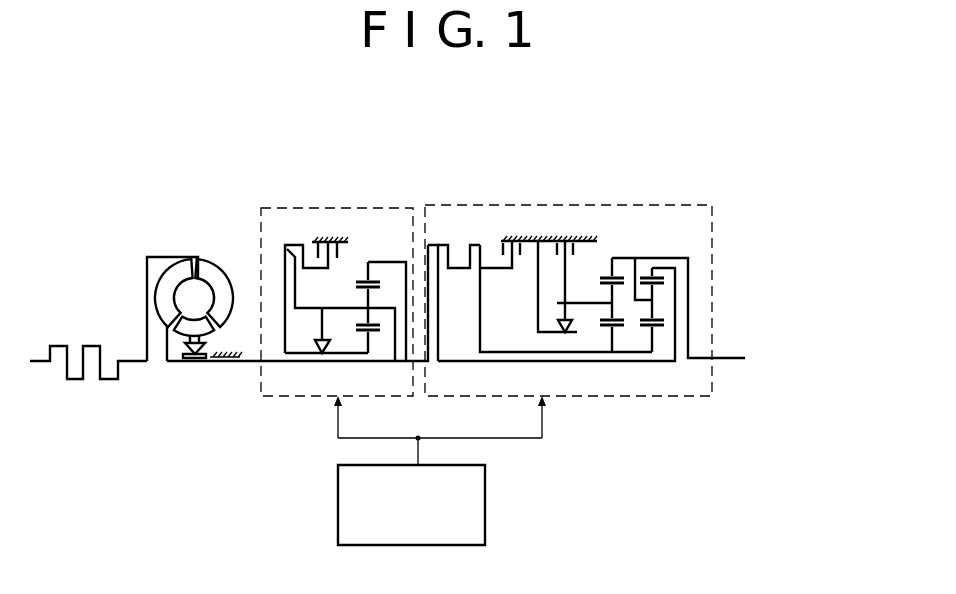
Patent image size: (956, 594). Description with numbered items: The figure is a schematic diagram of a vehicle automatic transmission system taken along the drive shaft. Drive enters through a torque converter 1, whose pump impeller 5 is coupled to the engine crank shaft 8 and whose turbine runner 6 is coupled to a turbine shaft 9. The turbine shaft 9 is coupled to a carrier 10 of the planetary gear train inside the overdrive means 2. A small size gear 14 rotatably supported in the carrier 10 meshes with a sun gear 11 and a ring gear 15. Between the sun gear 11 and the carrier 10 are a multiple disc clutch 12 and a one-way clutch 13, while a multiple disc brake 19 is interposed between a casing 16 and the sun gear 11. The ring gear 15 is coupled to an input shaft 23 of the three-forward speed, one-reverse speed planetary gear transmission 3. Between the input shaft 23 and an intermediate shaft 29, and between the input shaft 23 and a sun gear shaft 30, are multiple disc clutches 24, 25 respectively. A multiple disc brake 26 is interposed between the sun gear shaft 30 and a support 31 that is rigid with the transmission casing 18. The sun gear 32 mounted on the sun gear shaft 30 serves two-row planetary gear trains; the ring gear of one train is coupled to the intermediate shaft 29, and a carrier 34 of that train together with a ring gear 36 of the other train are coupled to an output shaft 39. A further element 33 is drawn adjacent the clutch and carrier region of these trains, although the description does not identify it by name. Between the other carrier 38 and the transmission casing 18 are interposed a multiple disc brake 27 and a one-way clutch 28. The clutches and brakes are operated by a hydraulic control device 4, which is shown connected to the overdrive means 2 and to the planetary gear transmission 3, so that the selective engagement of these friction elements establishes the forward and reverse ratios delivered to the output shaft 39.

The torque converter 1 is at (179, 306).
The overdrive means 2 is at (388, 208).
The planetary gear transmission 3 is at (712, 205).
The hydraulic control device 4 is at (485, 502).
The pump impeller 5 is at (217, 280).
The turbine runner 6 is at (172, 275).
The engine crank shaft 8 is at (70, 378).
The turbine shaft 9 is at (215, 363).
The carrier 10 is at (393, 343).
The sun gear 11 is at (368, 340).
The multiple disc clutch 12 is at (285, 245).
The one-way clutch 13 is at (315, 350).
The small size gear 14 is at (370, 298).
The ring gear 15 is at (384, 262).
The casing 16 is at (328, 238).
The transmission casing 18 is at (547, 235).
The multiple disc brake 19 is at (315, 240).
The input shaft 23 is at (418, 362).
The multiple disc clutch 24 is at (431, 243).
The multiple disc clutch 25 is at (470, 245).
The multiple disc brake 26 is at (518, 245).
The multiple disc brake 27 is at (571, 240).
The one-way clutch 28 is at (572, 334).
The intermediate shaft 29 is at (582, 362).
The sun gear shaft 30 is at (600, 353).
The support 31 is at (500, 248).
The sun gear 32 is at (615, 333).
The clutch 33 is at (652, 273).
The carrier 34 is at (638, 300).
The ring gear 36 is at (615, 268).
The carrier 38 is at (592, 302).
The output shaft 39 is at (735, 359).